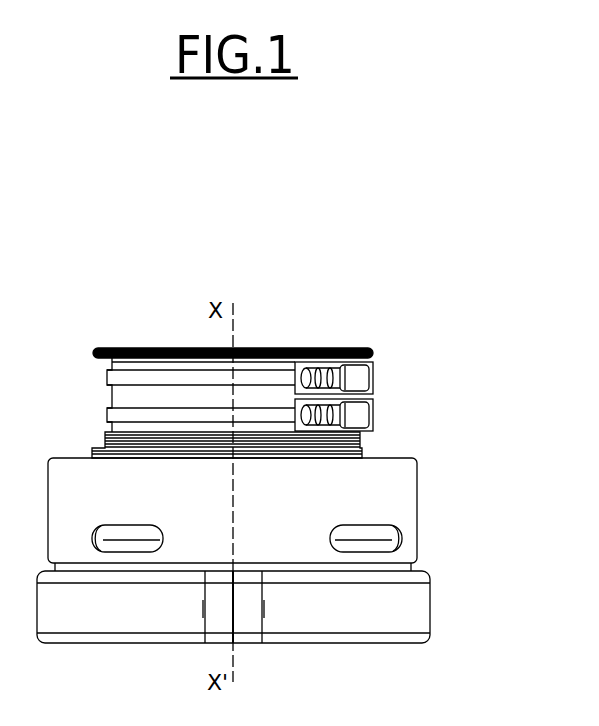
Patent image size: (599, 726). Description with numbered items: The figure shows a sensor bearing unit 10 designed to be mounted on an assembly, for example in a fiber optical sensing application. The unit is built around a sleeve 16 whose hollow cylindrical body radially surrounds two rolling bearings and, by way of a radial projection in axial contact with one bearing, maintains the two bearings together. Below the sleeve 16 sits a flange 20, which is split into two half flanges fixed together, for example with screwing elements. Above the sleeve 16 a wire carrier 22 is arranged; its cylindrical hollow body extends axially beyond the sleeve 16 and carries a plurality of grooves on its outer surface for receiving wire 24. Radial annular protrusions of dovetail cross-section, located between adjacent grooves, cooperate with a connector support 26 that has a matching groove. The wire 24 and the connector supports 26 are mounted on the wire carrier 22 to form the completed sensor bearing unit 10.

The sensor bearing unit 10 is at (500, 492).
The sleeve 16 is at (408, 520).
The flange 20 is at (436, 602).
The wire carrier 22 is at (95, 377).
The wire 24 is at (362, 435).
The connector support 26 is at (381, 379).